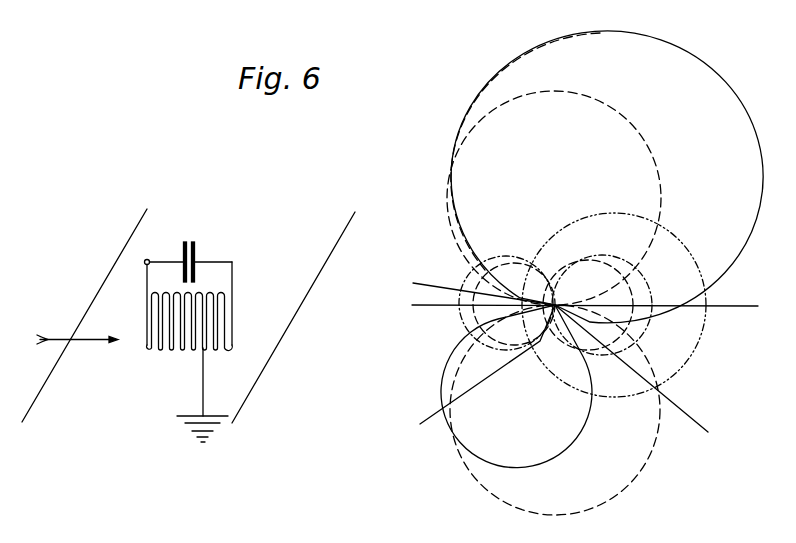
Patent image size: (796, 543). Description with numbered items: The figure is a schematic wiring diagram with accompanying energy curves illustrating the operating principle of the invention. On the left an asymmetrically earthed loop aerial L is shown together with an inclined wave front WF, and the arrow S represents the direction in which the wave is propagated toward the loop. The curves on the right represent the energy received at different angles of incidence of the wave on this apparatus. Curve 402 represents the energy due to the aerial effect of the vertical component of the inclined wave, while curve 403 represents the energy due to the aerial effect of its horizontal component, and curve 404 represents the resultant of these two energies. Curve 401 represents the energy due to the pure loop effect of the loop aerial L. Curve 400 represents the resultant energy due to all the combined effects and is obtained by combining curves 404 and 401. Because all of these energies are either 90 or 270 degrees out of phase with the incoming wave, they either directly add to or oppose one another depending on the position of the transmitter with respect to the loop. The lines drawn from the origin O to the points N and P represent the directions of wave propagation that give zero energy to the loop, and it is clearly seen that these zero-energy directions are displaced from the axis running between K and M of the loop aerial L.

The curve 400 is at (705, 60).
The curve 401 is at (452, 229).
The curve 402 is at (474, 370).
The curve 403 is at (601, 257).
The curve 404 is at (538, 317).
The phase angle 90 is at (694, 348).
The phase angle 270 is at (555, 390).
The end point of loop axis K is at (578, 307).
The end point of loop axis M is at (769, 307).
The end point of zero-energy direction N is at (477, 289).
The end point of zero-energy direction P is at (637, 376).
The origin O is at (563, 295).
The arrow S is at (76, 348).
The loop aerial L is at (232, 317).
The wave front WF is at (124, 244).